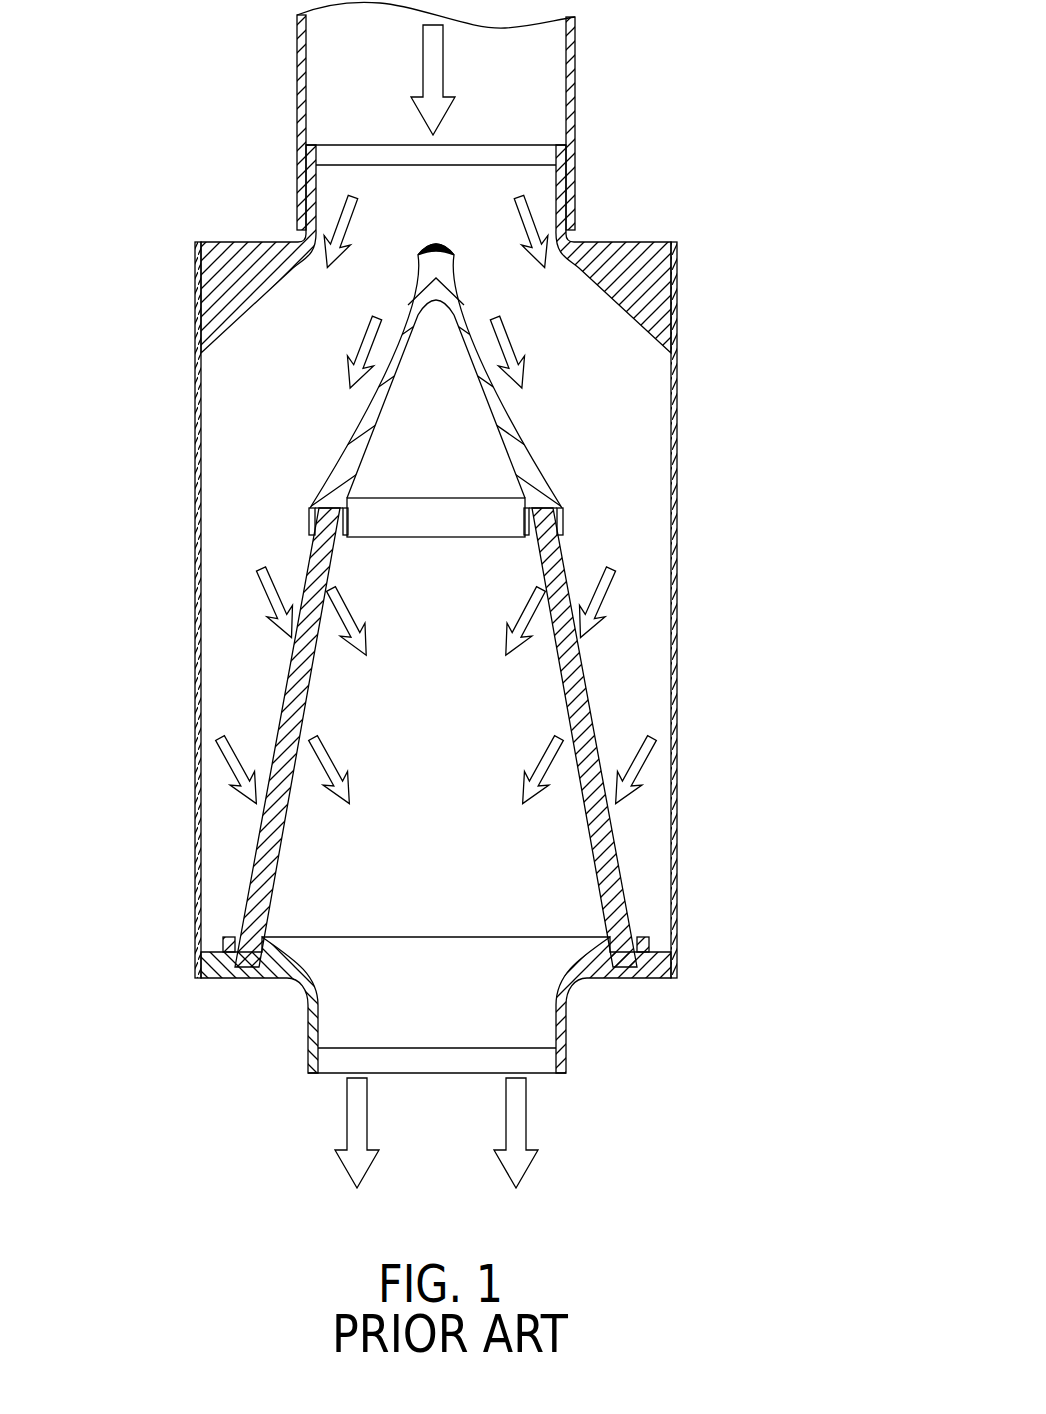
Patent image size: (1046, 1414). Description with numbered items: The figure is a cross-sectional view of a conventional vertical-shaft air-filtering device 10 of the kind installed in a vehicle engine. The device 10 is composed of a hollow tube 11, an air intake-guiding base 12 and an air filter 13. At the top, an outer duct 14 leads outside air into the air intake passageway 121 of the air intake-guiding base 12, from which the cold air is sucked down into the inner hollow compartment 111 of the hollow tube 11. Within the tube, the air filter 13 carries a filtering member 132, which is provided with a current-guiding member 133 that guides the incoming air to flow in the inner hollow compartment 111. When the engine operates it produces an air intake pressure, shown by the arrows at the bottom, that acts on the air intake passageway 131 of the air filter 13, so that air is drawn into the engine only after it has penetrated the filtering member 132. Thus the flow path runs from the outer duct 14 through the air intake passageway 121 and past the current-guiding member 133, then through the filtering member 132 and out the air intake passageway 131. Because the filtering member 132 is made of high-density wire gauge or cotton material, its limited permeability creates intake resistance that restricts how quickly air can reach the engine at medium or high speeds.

The vertical-shaft air-filtering device 10 is at (450, 596).
The hollow tube 11 is at (197, 750).
The inner hollow compartment 111 is at (650, 588).
The air intake-guiding base 12 is at (469, 249).
The air intake passageway 121 is at (537, 190).
The air filter 13 is at (514, 605).
The air intake passageway 131 is at (330, 1012).
The filtering member 132 is at (623, 921).
The current-guiding member 133 is at (520, 458).
The outer duct 14 is at (297, 124).